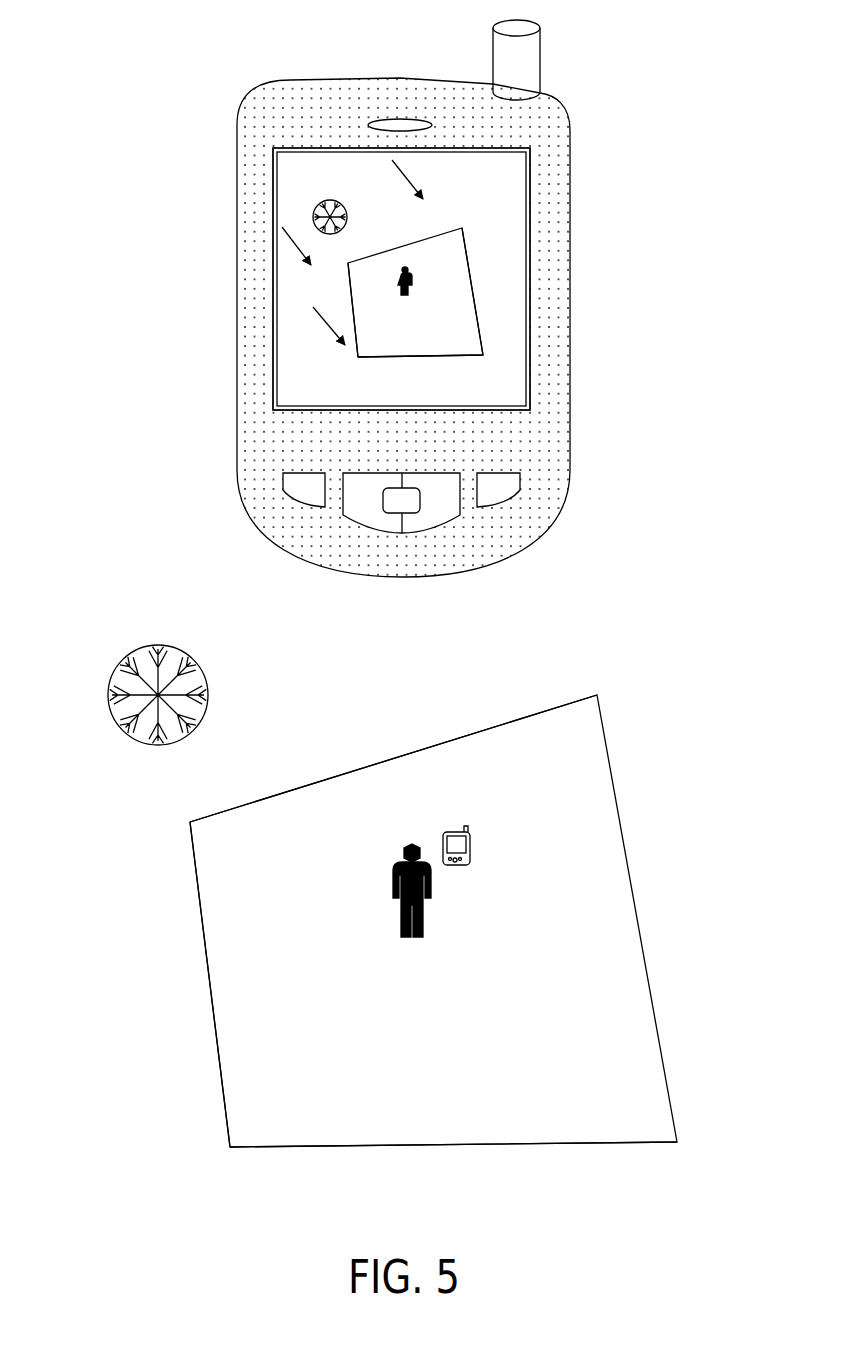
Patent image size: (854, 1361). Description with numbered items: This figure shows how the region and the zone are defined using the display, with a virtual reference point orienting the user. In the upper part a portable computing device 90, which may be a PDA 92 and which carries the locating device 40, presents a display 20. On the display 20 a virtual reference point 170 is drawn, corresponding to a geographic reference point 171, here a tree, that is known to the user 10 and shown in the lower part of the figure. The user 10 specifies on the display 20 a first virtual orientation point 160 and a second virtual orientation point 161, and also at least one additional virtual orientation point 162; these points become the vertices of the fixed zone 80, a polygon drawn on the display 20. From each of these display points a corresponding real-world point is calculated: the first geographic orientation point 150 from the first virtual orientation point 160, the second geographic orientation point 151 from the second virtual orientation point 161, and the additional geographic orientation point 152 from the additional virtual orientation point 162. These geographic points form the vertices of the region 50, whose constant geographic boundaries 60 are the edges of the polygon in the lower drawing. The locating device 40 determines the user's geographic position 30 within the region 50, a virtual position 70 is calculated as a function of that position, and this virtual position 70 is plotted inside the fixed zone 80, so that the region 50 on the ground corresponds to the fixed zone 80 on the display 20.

The user 10 is at (408, 935).
The display 20 is at (513, 383).
The geographic position 30 is at (412, 940).
The locating device 40 is at (507, 298).
The region 50 is at (481, 921).
The constant geographic boundaries 60 is at (670, 1097).
The virtual position 70 is at (417, 282).
The fixed zone 80 is at (473, 337).
The portable computing device 90 is at (478, 830).
The PDA 92 is at (547, 487).
The first geographic orientation point 150 is at (230, 1147).
The second geographic orientation point 151 is at (190, 822).
The additional geographic orientation point 152 is at (597, 695).
The first virtual orientation point 160 is at (358, 357).
The second virtual orientation point 161 is at (348, 263).
The additional virtual orientation point 162 is at (462, 228).
The virtual reference point 170 is at (312, 215).
The geographic reference point 171 is at (210, 695).